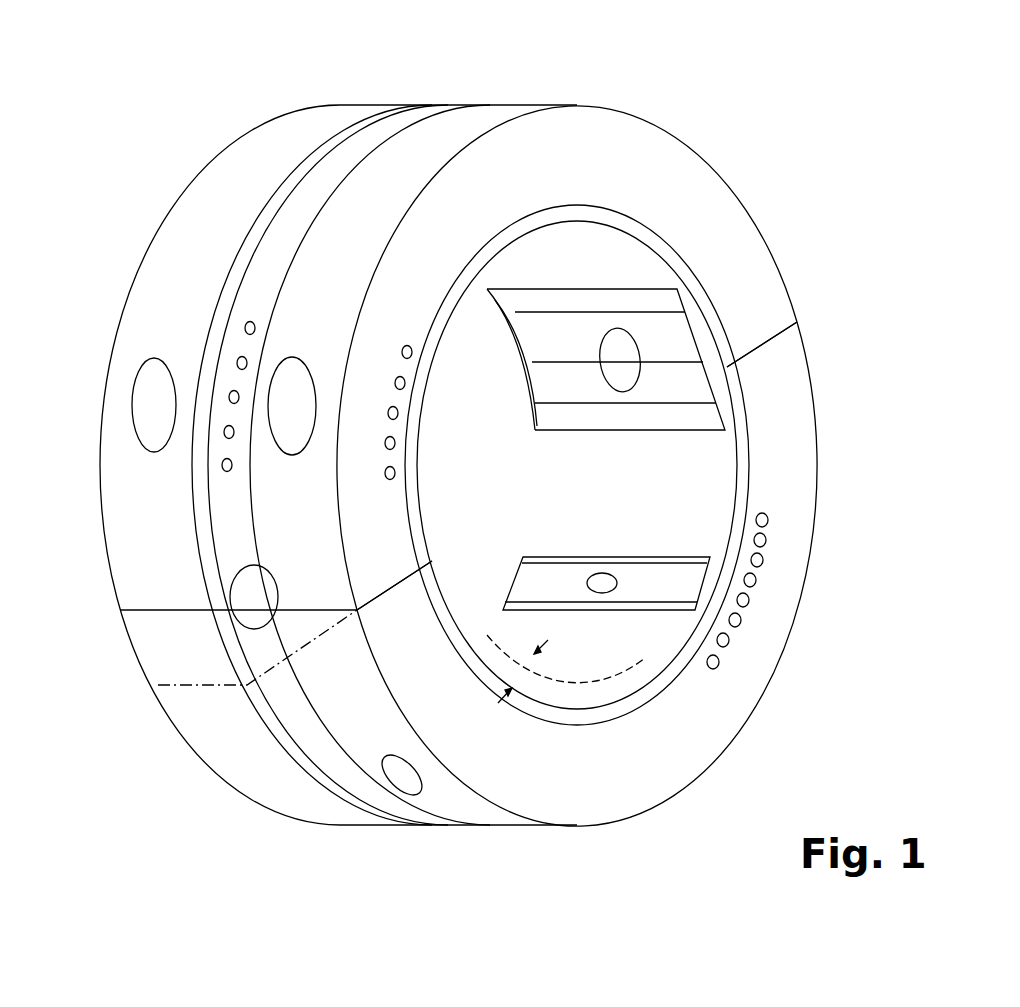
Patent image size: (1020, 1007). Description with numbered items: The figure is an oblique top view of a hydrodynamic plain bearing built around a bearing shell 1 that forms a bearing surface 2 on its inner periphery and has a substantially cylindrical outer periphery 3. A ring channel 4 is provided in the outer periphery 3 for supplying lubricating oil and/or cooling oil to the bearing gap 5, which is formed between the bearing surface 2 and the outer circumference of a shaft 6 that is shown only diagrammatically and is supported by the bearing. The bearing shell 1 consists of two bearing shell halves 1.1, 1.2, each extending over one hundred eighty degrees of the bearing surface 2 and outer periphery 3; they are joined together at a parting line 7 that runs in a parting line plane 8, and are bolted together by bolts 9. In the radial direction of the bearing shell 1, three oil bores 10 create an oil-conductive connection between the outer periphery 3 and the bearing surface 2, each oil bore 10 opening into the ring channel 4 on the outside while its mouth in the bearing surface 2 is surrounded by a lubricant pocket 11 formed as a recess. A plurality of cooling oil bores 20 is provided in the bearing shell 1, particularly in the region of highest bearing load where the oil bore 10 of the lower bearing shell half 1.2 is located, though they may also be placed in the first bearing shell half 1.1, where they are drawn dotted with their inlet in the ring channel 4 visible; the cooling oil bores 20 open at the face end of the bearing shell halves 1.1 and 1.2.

The bearing shell 1 is at (227, 90).
The first bearing shell half 1.1 is at (745, 250).
The second bearing shell half 1.2 is at (793, 483).
The bearing surface 2 is at (568, 693).
The outer periphery 3 is at (363, 710).
The ring channel 4 is at (295, 698).
The bearing gap 5 is at (523, 677).
The shaft 6 is at (645, 658).
The parting line 7 is at (763, 340).
The parting line plane 8 is at (187, 687).
The bolt 9 is at (135, 408).
The oil bore 10 is at (242, 583).
The lubricant pocket 11 is at (538, 333).
The cooling oil bore 20 is at (245, 327).